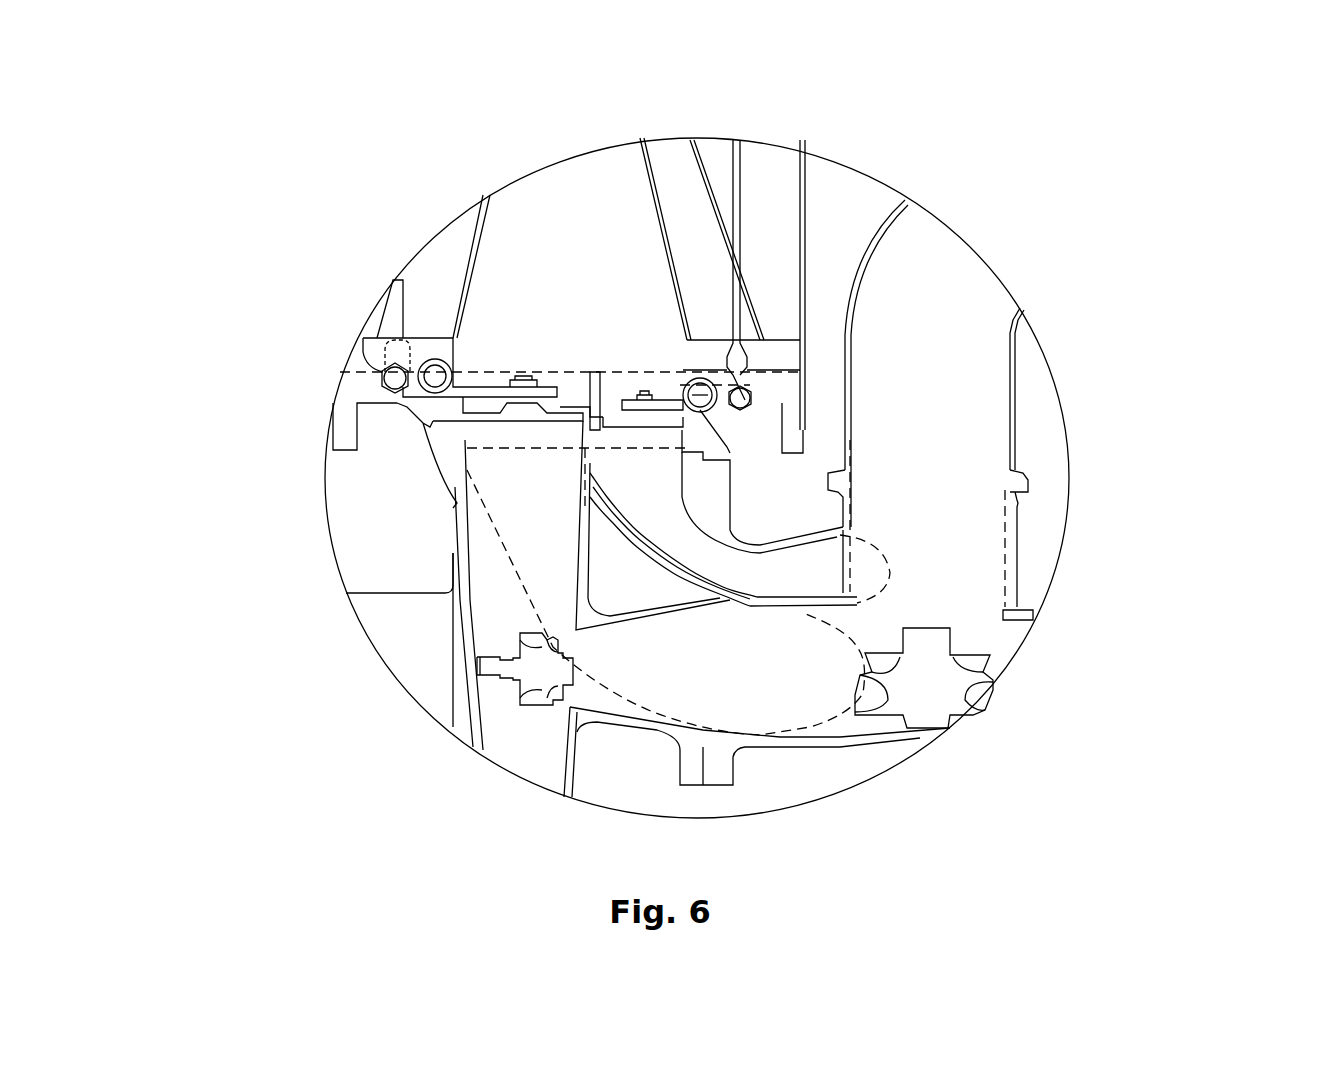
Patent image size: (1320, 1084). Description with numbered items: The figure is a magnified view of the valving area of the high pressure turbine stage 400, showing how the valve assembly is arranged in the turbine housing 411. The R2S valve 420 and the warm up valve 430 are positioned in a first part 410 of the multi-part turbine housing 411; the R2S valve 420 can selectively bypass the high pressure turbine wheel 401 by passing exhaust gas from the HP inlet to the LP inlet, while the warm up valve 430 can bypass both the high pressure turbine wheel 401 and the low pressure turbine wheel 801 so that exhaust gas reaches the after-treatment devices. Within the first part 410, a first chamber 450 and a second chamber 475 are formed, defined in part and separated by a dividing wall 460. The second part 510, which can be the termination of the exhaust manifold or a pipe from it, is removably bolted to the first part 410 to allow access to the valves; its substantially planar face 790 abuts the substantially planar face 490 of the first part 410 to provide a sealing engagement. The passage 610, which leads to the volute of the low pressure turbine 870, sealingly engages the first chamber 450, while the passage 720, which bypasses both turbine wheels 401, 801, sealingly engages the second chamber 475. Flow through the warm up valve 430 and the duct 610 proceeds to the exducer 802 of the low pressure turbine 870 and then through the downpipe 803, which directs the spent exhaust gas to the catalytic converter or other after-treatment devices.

The high pressure turbine stage 400 is at (517, 715).
The high pressure turbine wheel 401 is at (523, 670).
The first part 410 is at (572, 737).
The turbine housing 411 is at (460, 507).
The R2S valve 420 is at (522, 380).
The warm up valve 430 is at (647, 395).
The first chamber 450 is at (572, 390).
The dividing wall 460 is at (598, 385).
The second chamber 475 is at (622, 375).
The planar face 490 is at (357, 370).
The second part 510 is at (367, 350).
The duct 610 is at (653, 697).
The opening or passage 720 is at (647, 483).
The planar face 790 is at (357, 372).
The low pressure turbine wheel 801 is at (927, 681).
The exducer 802 is at (1005, 547).
The downpipe 803 is at (1010, 367).
The low pressure turbine 870 is at (1000, 627).